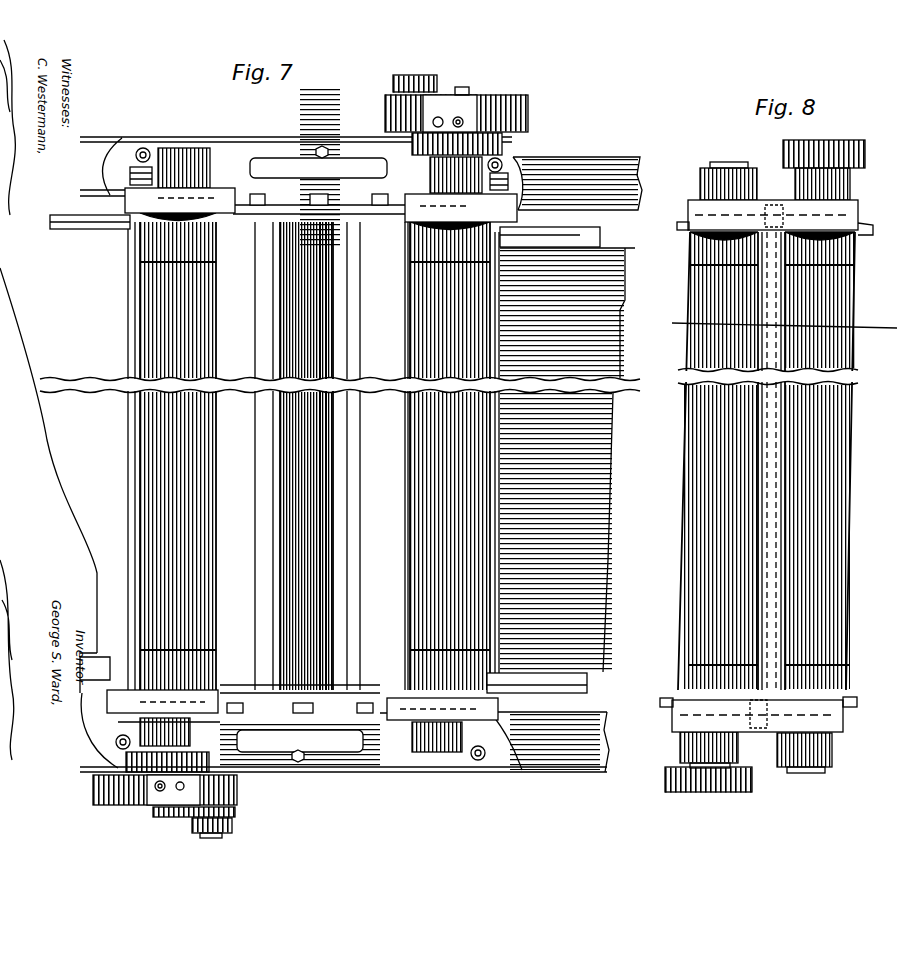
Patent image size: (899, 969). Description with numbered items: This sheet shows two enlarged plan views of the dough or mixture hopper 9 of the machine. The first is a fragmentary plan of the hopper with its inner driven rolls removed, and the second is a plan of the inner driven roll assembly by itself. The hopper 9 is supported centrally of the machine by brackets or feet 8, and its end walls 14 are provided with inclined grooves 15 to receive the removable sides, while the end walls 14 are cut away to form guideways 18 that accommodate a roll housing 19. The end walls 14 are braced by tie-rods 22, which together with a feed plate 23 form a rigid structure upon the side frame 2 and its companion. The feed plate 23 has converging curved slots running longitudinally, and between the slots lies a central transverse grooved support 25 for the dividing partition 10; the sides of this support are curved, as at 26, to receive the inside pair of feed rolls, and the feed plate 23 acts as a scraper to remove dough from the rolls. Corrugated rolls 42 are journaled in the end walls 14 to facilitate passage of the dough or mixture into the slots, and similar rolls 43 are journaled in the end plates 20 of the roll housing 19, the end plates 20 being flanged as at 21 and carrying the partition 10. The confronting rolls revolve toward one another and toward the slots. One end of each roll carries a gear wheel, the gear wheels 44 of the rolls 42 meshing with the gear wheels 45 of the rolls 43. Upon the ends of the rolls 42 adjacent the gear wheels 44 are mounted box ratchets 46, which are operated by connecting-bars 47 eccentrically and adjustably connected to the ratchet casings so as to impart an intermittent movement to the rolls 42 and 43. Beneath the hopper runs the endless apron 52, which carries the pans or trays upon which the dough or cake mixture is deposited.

In FIG. 7, the side frame 2 is at (312, 442).
In FIG. 7, the brackets or feet 8 is at (363, 146).
In FIG. 7, the dough or mixture hopper 9 is at (394, 456).
In FIG. 8, the dough or mixture hopper 9 is at (778, 327).
In FIG. 8, the dividing partition 10 is at (767, 573).
In FIG. 7, the end walls 14 is at (218, 195).
In FIG. 7, the inclined grooves 15 is at (132, 218).
In FIG. 7, the guideways 18 is at (236, 242).
In FIG. 8, the roll housing 19 is at (752, 467).
In FIG. 8, the end plates 20 is at (852, 213).
In FIG. 8, the flanges 21 is at (678, 222).
In FIG. 7, the tie-rods 22 is at (130, 483).
In FIG. 7, the feed plate 23 is at (305, 456).
In FIG. 7, the central transverse grooved support 25 is at (330, 470).
In FIG. 7, the curved sides of support 26 is at (287, 423).
In FIG. 7, the corrugated rolls 42 is at (155, 313).
In FIG. 8, the corrugated rolls 43 is at (695, 448).
In FIG. 7, the gear wheels 44 is at (502, 143).
In FIG. 8, the gear wheels 45 is at (863, 149).
In FIG. 7, the box ratchets 46 is at (512, 110).
In FIG. 7, the connecting-bars 47 is at (233, 824).
In FIG. 7, the endless apron 52 is at (59, 518).